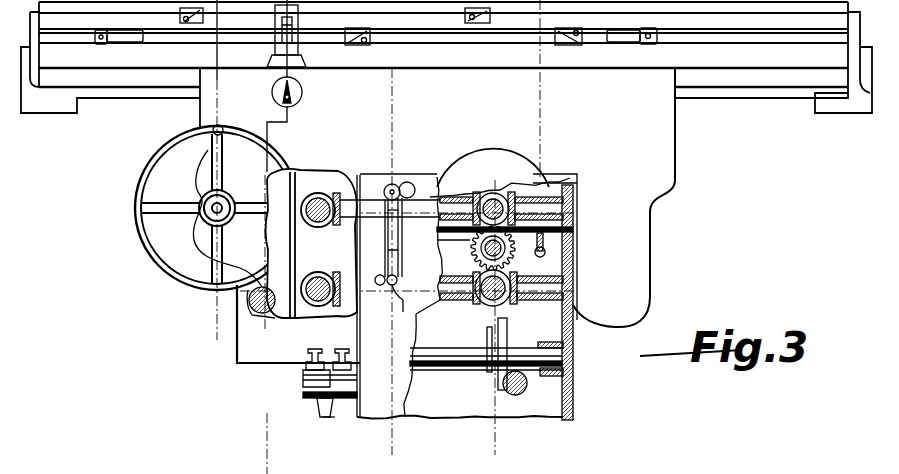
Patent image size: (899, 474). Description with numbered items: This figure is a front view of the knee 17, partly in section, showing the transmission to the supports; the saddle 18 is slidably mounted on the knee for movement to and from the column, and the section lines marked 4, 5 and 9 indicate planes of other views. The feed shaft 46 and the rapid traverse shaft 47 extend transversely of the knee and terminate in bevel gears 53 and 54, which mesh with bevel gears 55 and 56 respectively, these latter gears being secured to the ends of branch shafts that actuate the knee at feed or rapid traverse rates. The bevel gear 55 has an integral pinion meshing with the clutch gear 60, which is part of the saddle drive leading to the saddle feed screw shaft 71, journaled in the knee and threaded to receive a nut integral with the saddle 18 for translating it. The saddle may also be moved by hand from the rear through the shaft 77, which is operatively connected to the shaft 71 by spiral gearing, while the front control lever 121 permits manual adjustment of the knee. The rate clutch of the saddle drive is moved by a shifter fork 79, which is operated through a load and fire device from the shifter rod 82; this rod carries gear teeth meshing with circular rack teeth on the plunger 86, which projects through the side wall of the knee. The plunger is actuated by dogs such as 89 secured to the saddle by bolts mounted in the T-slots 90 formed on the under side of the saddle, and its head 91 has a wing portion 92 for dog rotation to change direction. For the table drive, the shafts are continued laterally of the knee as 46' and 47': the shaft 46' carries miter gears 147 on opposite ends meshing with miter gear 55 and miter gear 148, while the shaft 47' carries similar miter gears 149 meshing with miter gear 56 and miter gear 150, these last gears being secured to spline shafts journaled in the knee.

The miter gear 148 is at (313, 172).
The miter gears 147 is at (336, 190).
The bevel gear 55 is at (462, 188).
The bevel gear 53 is at (521, 170).
The feed shaft 46 is at (508, 184).
The lateral continuation of the feed shaft 46' is at (410, 233).
The shaft 77 is at (402, 230).
The front control lever 121 is at (402, 250).
The clutch gear 60 is at (472, 250).
The lateral continuation of the rapid traverse shaft 47' is at (460, 281).
The saddle feed screw shaft 71 is at (572, 222).
The rapid traverse shaft 47 is at (542, 288).
The miter gear 150 is at (305, 250).
The miter gears 149 is at (320, 318).
The bevel gear 56 is at (458, 310).
The shifter fork 79 is at (511, 328).
The shifter rod 82 is at (524, 392).
The bevel gear 54 is at (575, 325).
The knee 17 is at (576, 388).
The saddle 18 is at (668, 126).
The T-slots 90 is at (308, 354).
The dog 89 is at (303, 375).
The plunger 86 is at (303, 387).
The head 91 is at (320, 412).
The wing portion 92 is at (330, 418).
The section line 9 is at (267, 462).
The section line 4 is at (393, 445).
The section line 5 is at (495, 445).